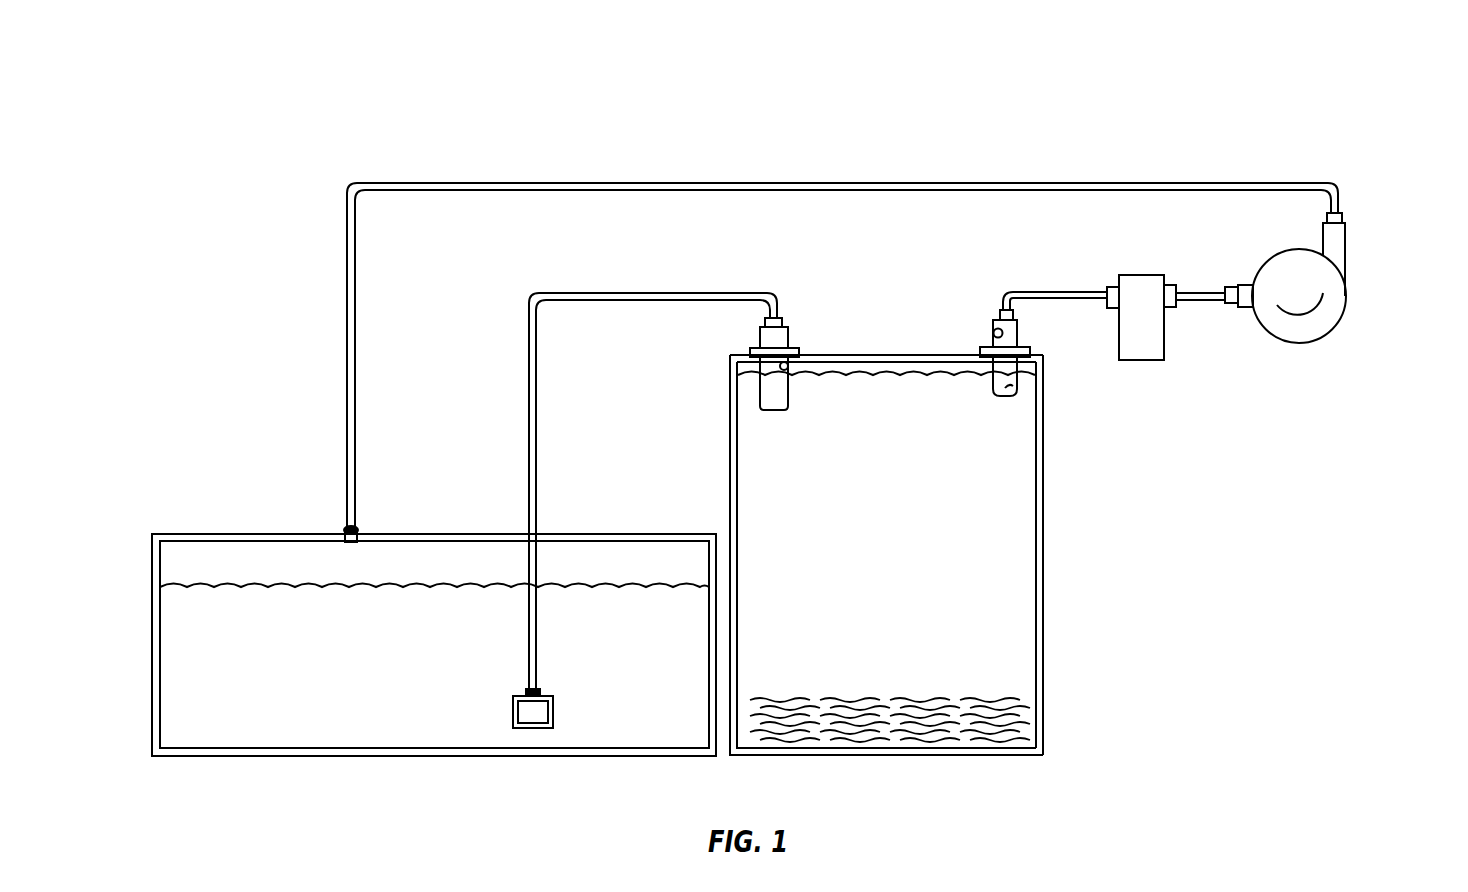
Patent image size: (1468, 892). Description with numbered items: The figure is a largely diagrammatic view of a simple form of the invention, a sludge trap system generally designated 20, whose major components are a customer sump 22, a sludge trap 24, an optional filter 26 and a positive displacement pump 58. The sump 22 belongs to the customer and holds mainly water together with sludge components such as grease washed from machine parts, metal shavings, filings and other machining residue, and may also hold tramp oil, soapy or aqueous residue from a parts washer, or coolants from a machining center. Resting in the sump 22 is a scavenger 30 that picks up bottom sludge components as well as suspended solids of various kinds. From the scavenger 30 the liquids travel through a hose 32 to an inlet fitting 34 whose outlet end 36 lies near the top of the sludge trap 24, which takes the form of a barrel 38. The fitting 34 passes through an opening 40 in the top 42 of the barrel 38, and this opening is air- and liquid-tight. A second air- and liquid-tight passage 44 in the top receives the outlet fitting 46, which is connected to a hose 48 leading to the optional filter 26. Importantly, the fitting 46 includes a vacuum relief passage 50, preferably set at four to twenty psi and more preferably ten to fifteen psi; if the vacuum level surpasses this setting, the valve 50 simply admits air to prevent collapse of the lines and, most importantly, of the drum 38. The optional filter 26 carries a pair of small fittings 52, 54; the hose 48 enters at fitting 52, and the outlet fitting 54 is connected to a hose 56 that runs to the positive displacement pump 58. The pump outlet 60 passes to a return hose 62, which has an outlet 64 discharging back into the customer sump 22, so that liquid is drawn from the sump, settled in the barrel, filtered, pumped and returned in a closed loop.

The system 20 is at (1361, 106).
The customer sump 22 is at (660, 634).
The sludge trap 24 is at (917, 535).
The optional filter 26 is at (1120, 330).
The scavenger 30 is at (553, 707).
The hose 32 is at (538, 395).
The inlet fitting 34 is at (786, 333).
The outlet end 36 is at (789, 395).
The barrel 38 is at (1042, 522).
The opening 40 is at (790, 364).
The top 42 is at (882, 355).
The passage 44 is at (995, 376).
The outlet fitting 46 is at (1017, 340).
The hose 48 is at (1048, 290).
The vacuum relief passage 50 is at (993, 325).
The small fitting 52 is at (1115, 285).
The outlet fitting 54 is at (1175, 288).
The hose 56 is at (1192, 303).
The positive displacement pump 58 is at (1345, 300).
The pump outlet 60 is at (1345, 221).
The return hose 62 is at (748, 183).
The outlet 64 is at (357, 533).